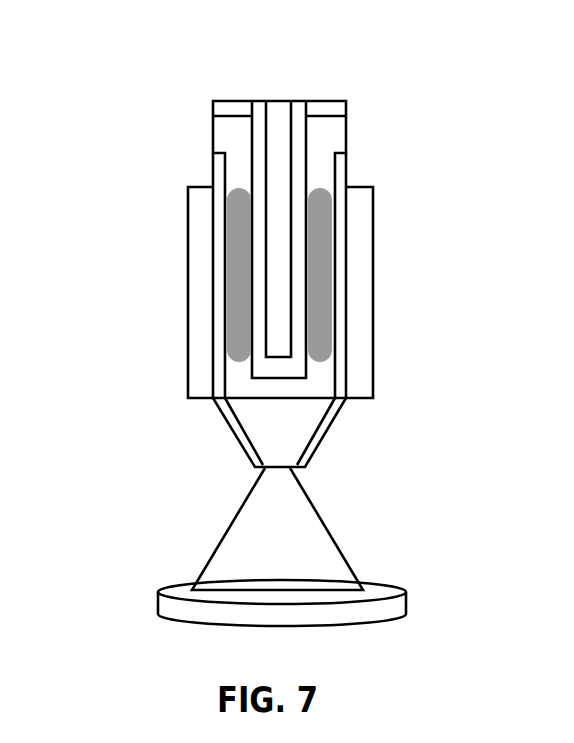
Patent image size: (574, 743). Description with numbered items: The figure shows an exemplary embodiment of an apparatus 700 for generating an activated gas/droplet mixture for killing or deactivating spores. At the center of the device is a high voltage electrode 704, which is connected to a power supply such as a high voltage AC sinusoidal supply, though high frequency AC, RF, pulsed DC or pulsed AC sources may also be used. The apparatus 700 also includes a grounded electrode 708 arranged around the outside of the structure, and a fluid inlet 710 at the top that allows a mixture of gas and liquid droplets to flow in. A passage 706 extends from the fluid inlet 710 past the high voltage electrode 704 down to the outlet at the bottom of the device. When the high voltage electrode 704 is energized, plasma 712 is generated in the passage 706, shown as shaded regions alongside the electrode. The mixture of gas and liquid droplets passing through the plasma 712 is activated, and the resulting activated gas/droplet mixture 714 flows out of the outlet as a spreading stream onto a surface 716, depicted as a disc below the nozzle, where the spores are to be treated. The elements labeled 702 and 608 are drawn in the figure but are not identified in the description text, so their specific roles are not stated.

The apparatus 700 is at (140, 295).
The housing wall 702 is at (350, 175).
The high voltage electrode 704 is at (275, 138).
The passage 706 is at (327, 138).
The grounded electrode 708 is at (373, 313).
The fluid inlet 710 is at (350, 143).
The plasma 712 is at (317, 252).
The heater element 608 is at (252, 175).
The activated gas/droplet mixture 714 is at (332, 532).
The surface 716 is at (403, 587).